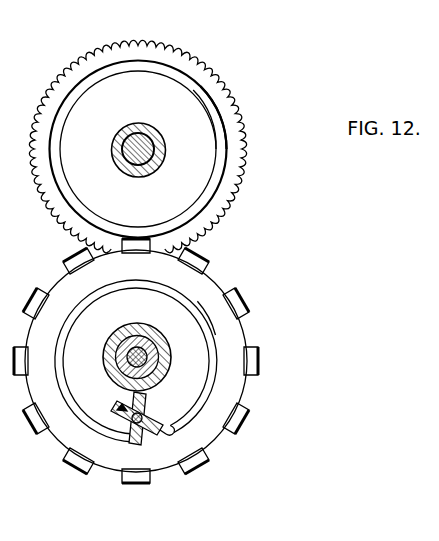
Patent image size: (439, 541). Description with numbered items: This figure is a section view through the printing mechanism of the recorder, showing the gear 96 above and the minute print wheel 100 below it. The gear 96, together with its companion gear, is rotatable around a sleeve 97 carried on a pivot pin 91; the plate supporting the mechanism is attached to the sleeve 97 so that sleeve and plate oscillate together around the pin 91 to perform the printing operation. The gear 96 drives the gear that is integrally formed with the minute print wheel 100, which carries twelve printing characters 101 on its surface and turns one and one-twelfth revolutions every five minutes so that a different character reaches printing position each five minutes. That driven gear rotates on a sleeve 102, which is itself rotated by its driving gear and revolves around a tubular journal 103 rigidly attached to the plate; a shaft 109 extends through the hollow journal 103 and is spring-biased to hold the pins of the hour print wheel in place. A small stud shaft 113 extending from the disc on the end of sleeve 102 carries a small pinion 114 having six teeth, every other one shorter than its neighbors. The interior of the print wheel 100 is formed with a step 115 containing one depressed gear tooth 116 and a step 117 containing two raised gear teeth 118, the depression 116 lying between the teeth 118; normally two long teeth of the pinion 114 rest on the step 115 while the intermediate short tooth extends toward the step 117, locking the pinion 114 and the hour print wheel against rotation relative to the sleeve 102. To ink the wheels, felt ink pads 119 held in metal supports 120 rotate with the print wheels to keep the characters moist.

The gear 96 is at (176, 62).
The pivot pin 91 is at (145, 133).
The sleeve 97 is at (117, 154).
The metal supports 120 is at (213, 127).
The felt ink pads 119 is at (227, 153).
The step 115 is at (186, 302).
The step 117 is at (216, 330).
The minute print wheel 100 is at (239, 345).
The printing characters 101 is at (256, 362).
The sleeve 102 is at (111, 348).
The tubular journal 103 is at (141, 350).
The shaft 109 is at (147, 358).
The stud shaft 113 is at (150, 407).
The pinion 114 is at (119, 408).
The depressed gear tooth 116 is at (163, 432).
The raised gear teeth 118 is at (171, 433).